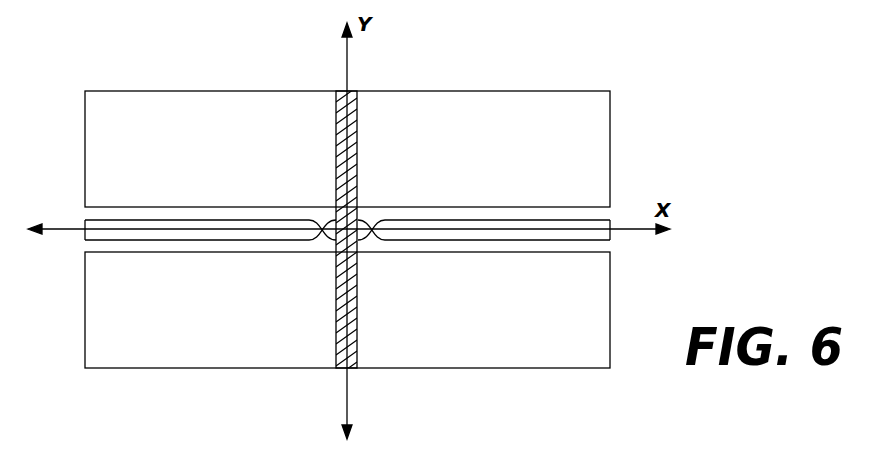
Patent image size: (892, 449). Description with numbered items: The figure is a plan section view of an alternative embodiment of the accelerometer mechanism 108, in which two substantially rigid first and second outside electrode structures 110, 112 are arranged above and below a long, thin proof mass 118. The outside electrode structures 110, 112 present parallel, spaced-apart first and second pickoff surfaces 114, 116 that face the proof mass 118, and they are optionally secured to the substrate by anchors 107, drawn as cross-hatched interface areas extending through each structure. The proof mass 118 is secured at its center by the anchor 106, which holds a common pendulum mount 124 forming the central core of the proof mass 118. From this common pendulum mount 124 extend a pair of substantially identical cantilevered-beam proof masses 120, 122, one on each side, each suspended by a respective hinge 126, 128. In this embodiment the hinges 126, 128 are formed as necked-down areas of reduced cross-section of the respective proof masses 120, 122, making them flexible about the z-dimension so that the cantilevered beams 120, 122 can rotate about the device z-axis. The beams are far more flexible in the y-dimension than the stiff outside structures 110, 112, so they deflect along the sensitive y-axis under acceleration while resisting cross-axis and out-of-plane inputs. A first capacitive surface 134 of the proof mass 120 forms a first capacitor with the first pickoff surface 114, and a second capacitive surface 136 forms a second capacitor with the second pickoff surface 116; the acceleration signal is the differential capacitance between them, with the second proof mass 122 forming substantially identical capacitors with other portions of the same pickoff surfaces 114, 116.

The anchor 106 is at (334, 238).
The anchors 107 is at (358, 120).
The accelerometer mechanism 108 is at (702, 156).
The first outside electrode structure 110 is at (488, 115).
The second outside electrode structure 112 is at (463, 337).
The first pickoff surface 114 is at (605, 212).
The second pickoff surface 116 is at (612, 252).
The proof mass 118 is at (639, 255).
The first cantilevered-beam proof mass 120 is at (614, 240).
The second cantilevered-beam proof mass 122 is at (86, 234).
The common pendulum mount 124 is at (331, 204).
The first hinge 126 is at (371, 232).
The second hinge 128 is at (322, 232).
The first capacitive surface 134 is at (535, 220).
The second capacitive surface 136 is at (520, 240).